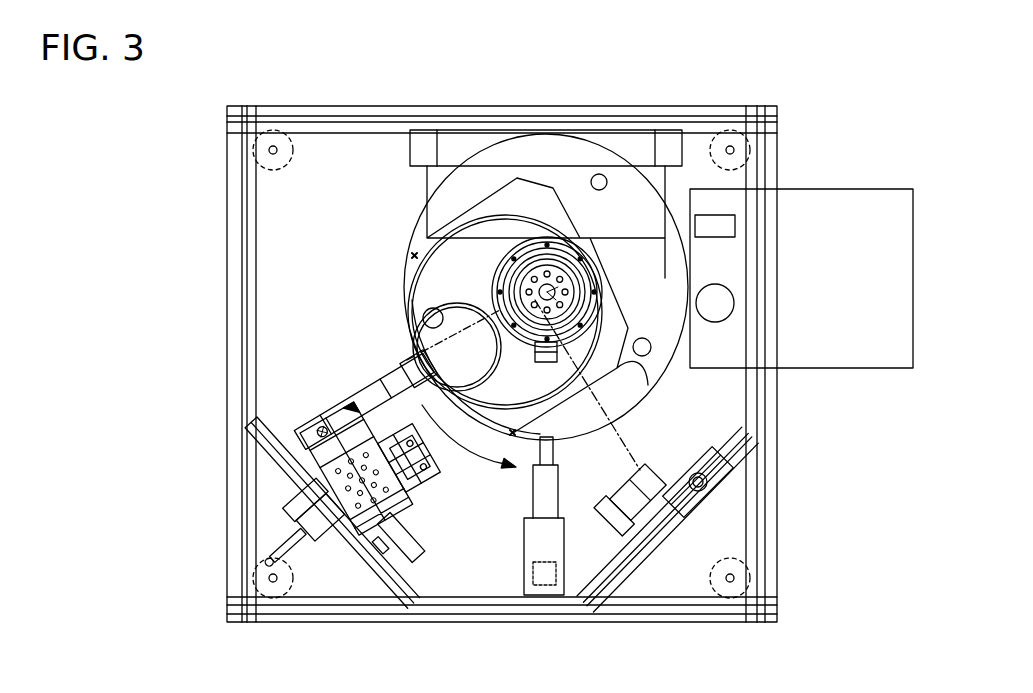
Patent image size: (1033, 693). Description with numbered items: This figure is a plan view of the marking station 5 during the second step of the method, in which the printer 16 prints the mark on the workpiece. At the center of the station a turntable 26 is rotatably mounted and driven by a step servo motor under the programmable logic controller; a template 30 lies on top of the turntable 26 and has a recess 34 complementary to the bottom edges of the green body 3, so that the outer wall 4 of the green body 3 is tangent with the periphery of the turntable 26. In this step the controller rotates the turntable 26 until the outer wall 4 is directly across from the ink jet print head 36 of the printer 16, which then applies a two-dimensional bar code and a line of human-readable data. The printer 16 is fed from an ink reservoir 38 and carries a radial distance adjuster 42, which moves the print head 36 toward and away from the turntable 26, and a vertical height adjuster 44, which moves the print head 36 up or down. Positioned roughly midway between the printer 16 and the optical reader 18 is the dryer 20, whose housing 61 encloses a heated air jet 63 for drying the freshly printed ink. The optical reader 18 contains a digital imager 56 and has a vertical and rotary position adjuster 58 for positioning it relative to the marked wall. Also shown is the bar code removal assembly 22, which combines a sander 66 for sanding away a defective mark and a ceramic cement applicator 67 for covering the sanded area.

The marking station 5 is at (212, 168).
The turntable 26 is at (667, 270).
The ceramic cement applicator 67 is at (720, 215).
The green body 3 is at (470, 298).
The recess 34 is at (400, 304).
The print head 36 is at (358, 368).
The outer wall 4 is at (405, 368).
The printer 16 is at (318, 404).
The ink reservoir 38 is at (263, 445).
The radial distance adjuster 42 is at (266, 523).
The vertical height adjuster 44 is at (365, 560).
The dryer 20 is at (522, 516).
The heated air jet 63 is at (513, 477).
The housing 61 is at (565, 558).
The digital imager 56 is at (627, 495).
The vertical and rotary position adjuster 58 is at (712, 505).
The optical reader 18 is at (686, 452).
The sander 66 is at (719, 322).
The bar code removal assembly 22 is at (890, 370).
The template 30 is at (628, 372).